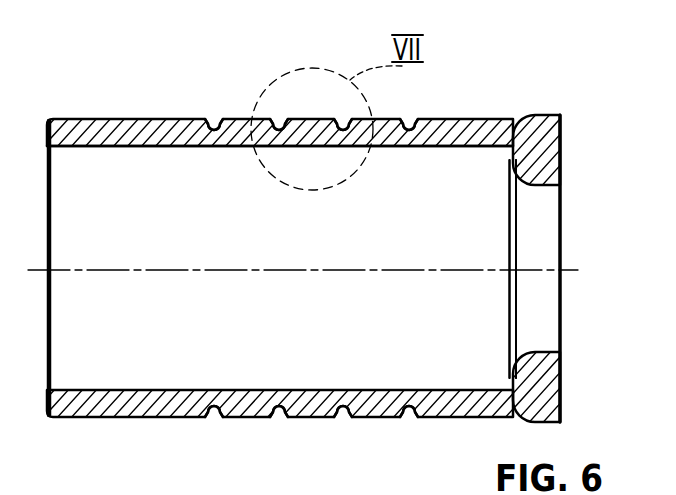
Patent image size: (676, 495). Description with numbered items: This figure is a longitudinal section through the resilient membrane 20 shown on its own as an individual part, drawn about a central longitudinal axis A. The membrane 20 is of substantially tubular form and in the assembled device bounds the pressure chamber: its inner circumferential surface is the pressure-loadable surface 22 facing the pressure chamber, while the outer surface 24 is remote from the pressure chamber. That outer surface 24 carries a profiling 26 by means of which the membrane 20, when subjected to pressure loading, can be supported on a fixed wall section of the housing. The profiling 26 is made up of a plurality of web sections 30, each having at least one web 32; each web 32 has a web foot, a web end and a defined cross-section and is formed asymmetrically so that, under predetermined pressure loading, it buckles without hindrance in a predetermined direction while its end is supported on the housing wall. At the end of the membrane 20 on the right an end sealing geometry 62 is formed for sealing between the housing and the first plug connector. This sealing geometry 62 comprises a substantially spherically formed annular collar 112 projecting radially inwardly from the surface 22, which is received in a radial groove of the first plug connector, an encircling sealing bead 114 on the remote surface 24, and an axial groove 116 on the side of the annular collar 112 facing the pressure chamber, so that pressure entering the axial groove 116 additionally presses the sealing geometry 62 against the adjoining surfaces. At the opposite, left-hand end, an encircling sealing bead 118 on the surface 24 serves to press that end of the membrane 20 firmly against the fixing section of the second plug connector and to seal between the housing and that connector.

The resilient membrane 20 is at (491, 52).
The pressure-loadable surface 22 is at (78, 147).
The surface remote from the pressure chamber 24 is at (113, 118).
The profiling 26 is at (204, 104).
The web sections 30 is at (220, 109).
The web 32 is at (212, 418).
The end sealing geometry 62 is at (540, 122).
The annular collar 112 is at (533, 188).
The sealing bead 114 is at (531, 422).
The axial groove 116 is at (512, 382).
The sealing bead 118 is at (78, 418).
The longitudinal axis A is at (545, 270).